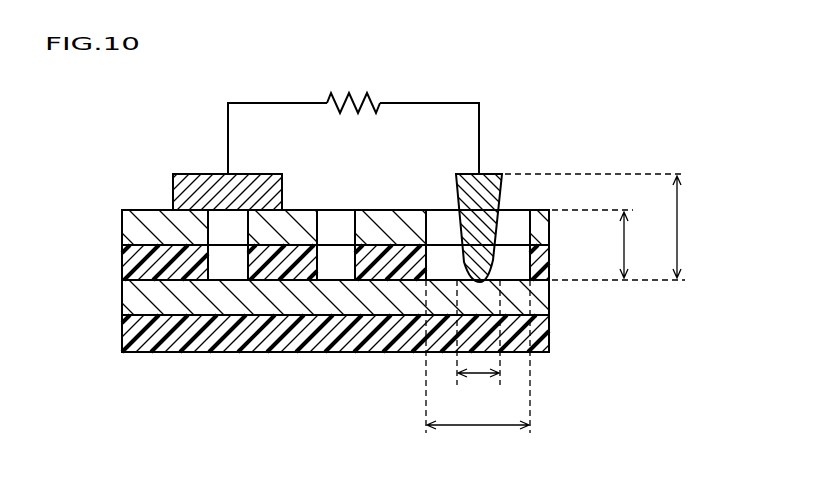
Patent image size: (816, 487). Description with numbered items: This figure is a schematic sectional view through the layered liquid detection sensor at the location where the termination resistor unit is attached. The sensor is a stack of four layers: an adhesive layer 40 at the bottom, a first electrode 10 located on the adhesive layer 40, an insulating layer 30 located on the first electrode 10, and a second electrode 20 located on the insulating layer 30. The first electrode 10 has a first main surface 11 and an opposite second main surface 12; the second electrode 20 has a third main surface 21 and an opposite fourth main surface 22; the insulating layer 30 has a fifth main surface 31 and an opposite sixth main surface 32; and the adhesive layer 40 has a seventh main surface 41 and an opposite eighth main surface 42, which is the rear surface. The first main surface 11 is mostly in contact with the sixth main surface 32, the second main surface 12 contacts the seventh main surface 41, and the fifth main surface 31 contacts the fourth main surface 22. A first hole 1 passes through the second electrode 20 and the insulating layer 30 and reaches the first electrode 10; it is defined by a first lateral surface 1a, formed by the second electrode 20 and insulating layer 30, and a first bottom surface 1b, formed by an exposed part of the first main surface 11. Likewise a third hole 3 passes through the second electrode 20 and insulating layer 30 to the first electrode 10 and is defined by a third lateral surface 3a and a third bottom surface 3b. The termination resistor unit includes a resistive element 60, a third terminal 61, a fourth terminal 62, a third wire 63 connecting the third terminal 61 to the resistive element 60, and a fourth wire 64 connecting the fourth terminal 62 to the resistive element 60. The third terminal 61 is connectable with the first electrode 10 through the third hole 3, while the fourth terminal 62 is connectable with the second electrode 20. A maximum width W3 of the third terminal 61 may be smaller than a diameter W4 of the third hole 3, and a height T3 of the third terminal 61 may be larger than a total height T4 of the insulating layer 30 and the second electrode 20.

The first hole 1 is at (335, 322).
The first lateral surface 1a is at (219, 268).
The first bottom surface 1b is at (237, 268).
The third hole 3 is at (400, 323).
The third lateral surface 3a is at (530, 284).
The third bottom surface 3b is at (535, 316).
The first electrode 10 is at (542, 303).
The first main surface 11 is at (141, 276).
The second main surface 12 is at (145, 340).
The second electrode 20 is at (541, 231).
The third main surface 21 is at (141, 213).
The fourth main surface 22 is at (146, 252).
The insulating layer 30 is at (541, 270).
The fifth main surface 31 is at (143, 241).
The sixth main surface 32 is at (147, 299).
The adhesive layer 40 is at (546, 352).
The seventh main surface 41 is at (141, 305).
The eighth main surface 42 is at (144, 356).
The resistive element 60 is at (355, 95).
The third terminal 61 is at (502, 224).
The fourth terminal 62 is at (195, 173).
The third wire 63 is at (437, 101).
The fourth wire 64 is at (274, 101).
The height of third terminal T3 is at (690, 227).
The total height of insulating layer and second electrode T4 is at (640, 245).
The maximum width of third terminal W3 is at (478, 387).
The diameter of third hole W4 is at (478, 438).